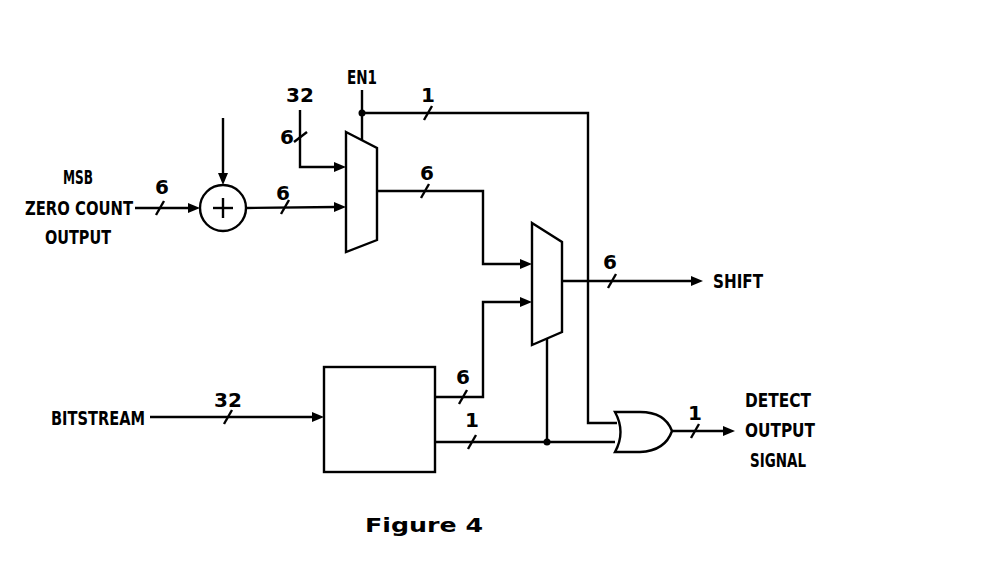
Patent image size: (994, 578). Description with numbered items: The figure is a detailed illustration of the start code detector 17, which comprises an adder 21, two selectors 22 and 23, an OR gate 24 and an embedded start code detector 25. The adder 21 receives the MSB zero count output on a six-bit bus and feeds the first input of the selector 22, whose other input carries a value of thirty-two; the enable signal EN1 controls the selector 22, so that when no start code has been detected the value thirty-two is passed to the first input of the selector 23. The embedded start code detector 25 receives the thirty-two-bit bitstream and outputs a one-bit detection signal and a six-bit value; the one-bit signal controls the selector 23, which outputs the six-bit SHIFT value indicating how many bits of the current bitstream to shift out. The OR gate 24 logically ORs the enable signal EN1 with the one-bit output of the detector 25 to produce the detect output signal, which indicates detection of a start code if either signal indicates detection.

The start code detector 17 is at (626, 70).
The adder 21 is at (226, 221).
The selector 22 is at (362, 240).
The selector 23 is at (548, 232).
The OR gate 24 is at (643, 438).
The embedded start code detector 25 is at (392, 369).